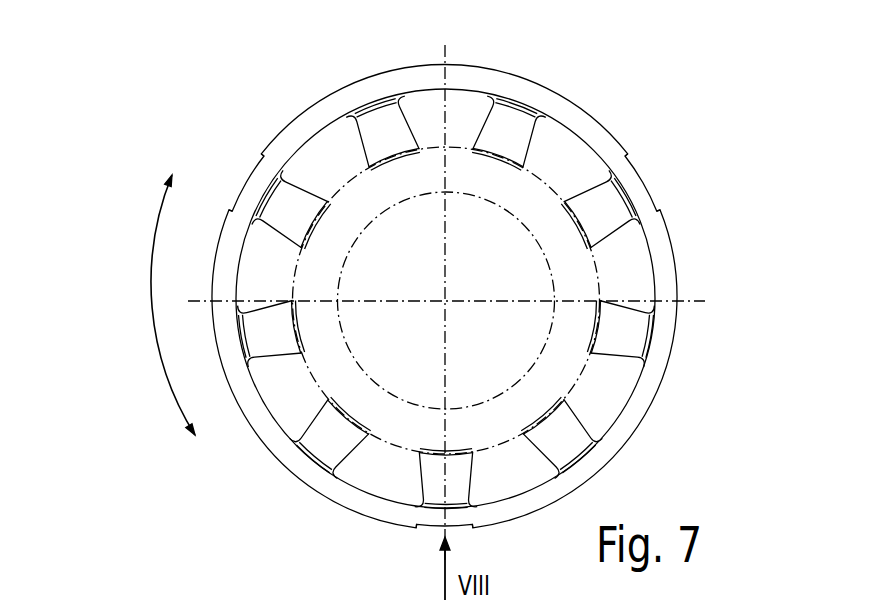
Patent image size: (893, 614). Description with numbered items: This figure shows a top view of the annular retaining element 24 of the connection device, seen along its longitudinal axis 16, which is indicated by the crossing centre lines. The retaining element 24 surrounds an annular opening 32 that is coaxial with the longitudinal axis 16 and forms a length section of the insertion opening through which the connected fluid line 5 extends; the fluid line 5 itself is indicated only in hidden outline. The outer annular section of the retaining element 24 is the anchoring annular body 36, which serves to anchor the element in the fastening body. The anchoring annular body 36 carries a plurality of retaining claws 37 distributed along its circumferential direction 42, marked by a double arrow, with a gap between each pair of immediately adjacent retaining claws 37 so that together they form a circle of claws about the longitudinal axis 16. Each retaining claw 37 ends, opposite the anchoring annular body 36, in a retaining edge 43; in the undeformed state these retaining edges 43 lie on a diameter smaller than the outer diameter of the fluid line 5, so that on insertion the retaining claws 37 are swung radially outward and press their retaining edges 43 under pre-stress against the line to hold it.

The retaining element 24 is at (592, 121).
The annular opening 32 is at (493, 245).
The anchoring annular body 36 is at (662, 252).
The fluid line 5 is at (557, 372).
The longitudinal axis 16 is at (448, 302).
The retaining claws 37 is at (272, 328).
The retaining edge 43 is at (437, 452).
The circumferential direction 42 is at (152, 320).